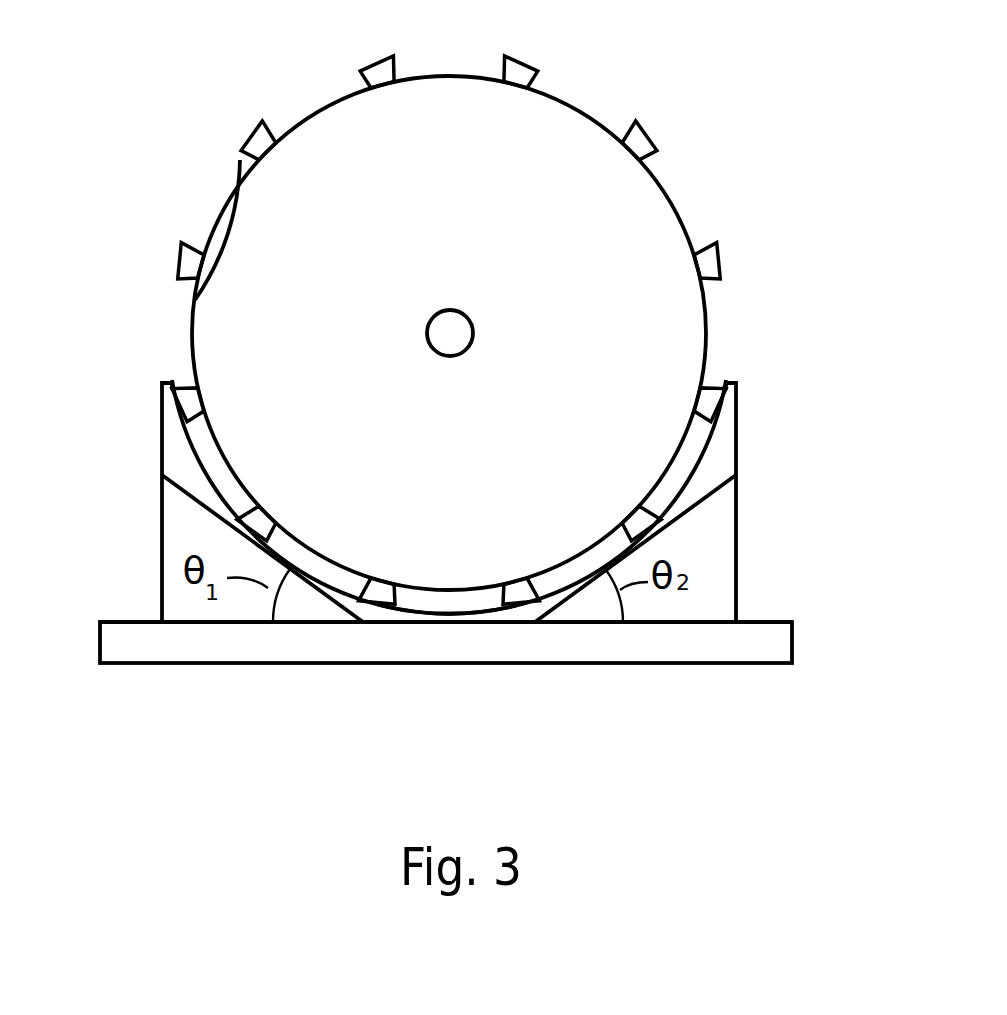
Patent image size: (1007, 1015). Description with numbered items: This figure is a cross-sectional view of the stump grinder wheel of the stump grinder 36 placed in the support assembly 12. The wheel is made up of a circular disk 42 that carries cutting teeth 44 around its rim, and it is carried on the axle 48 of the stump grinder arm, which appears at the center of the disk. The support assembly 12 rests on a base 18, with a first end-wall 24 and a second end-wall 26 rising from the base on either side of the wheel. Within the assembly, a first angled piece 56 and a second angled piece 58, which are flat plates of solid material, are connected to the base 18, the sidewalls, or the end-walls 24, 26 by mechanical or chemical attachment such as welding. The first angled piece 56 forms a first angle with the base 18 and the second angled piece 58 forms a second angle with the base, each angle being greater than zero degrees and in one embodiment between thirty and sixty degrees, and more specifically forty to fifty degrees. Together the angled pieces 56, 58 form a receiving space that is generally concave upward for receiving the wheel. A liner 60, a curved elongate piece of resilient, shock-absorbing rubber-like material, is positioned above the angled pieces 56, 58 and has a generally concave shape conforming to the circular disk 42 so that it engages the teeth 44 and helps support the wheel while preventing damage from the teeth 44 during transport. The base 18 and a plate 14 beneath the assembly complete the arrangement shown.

The support assembly 12 is at (763, 376).
The base plate 14 is at (530, 665).
The base 18 is at (235, 625).
The first end-wall 24 is at (160, 418).
The second end-wall 26 is at (740, 427).
The stump grinder 36 is at (312, 106).
The disk 42 is at (225, 208).
The teeth 44 is at (650, 130).
The axle 48 is at (473, 318).
The first angled piece 56 is at (160, 517).
The second angled piece 58 is at (740, 512).
The liner 60 is at (398, 613).